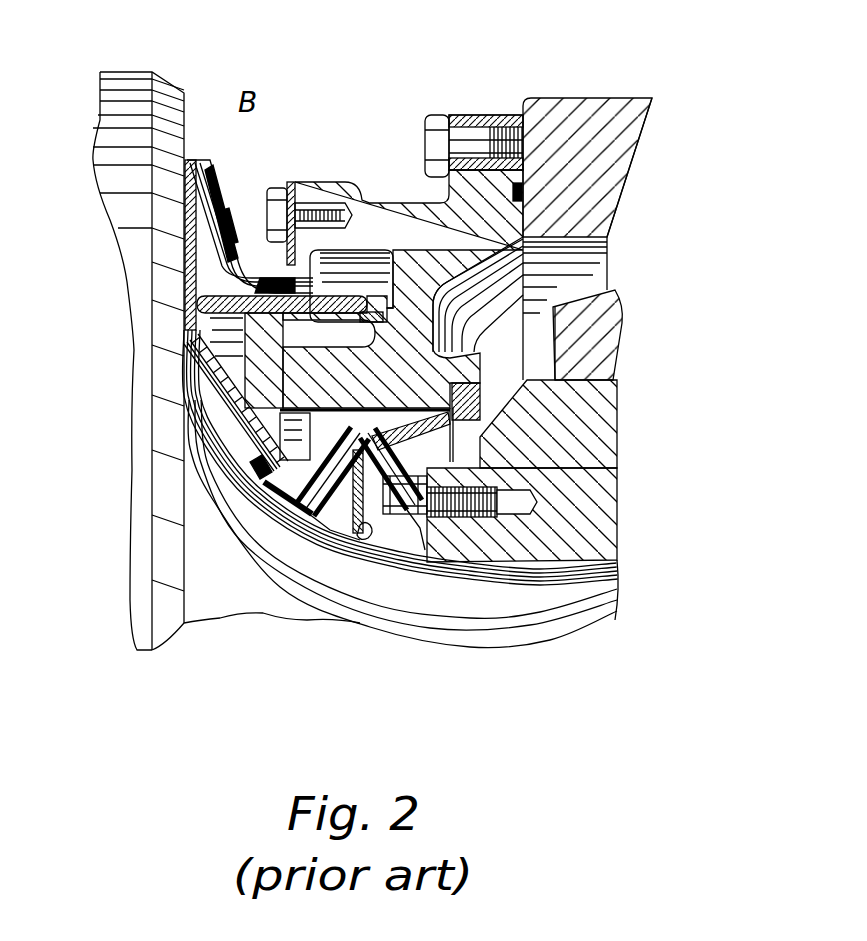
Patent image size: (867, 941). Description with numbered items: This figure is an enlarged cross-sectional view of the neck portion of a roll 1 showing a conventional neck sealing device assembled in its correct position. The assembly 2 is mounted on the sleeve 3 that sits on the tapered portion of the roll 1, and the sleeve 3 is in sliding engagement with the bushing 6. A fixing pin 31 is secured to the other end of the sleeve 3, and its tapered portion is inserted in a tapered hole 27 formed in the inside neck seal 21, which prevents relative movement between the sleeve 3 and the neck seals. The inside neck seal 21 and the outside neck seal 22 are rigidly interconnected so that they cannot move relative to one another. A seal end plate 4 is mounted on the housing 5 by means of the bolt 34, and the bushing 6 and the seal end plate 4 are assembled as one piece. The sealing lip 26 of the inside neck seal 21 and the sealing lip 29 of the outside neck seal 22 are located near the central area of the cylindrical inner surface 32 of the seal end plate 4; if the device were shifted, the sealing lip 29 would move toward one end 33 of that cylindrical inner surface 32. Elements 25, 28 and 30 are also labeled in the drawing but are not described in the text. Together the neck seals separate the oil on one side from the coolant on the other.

The roll 1 is at (131, 206).
The assembly 2 is at (647, 98).
The sleeve 3 is at (595, 500).
The seal end plate 4 is at (384, 215).
The housing 5 is at (558, 125).
The bushing 6 is at (595, 443).
The inside neck seal 21 is at (403, 543).
The outside neck seal 22 is at (318, 530).
The seal 25 is at (440, 447).
The sealing lip 26 is at (627, 335).
The tapered hole 27 is at (383, 532).
The hub 28 is at (306, 536).
The sealing lip 29 is at (327, 445).
The sealing sleeve 30 is at (310, 465).
The fixing pin 31 is at (425, 550).
The cylindrical inner surface 32 is at (345, 407).
The one end 33 is at (300, 413).
The bolt 34 is at (436, 113).